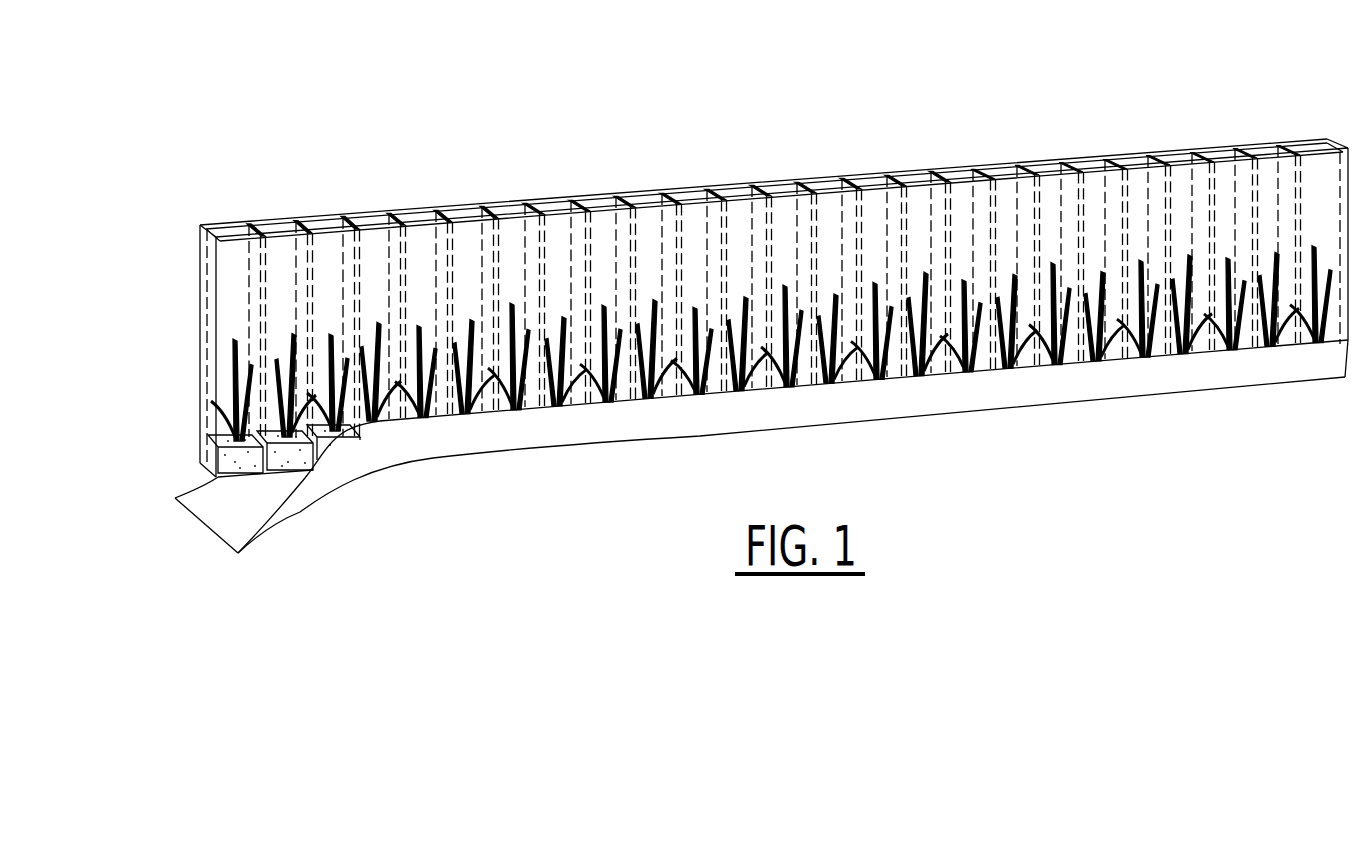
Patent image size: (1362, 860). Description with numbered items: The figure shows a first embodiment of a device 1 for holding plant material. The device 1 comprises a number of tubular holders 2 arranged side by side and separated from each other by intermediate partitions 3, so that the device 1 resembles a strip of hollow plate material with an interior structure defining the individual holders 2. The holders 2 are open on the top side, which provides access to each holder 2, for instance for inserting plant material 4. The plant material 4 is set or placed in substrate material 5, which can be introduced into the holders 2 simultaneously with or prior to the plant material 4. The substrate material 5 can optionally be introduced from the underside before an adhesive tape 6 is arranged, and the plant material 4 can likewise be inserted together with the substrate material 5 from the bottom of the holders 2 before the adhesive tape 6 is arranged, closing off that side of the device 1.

The device 1 is at (1008, 130).
The tubular holders 2 is at (228, 228).
The intermediate partitions 3 is at (261, 222).
The plant material 4 is at (230, 382).
The substrate material 5 is at (237, 458).
The adhesive tape 6 is at (257, 532).